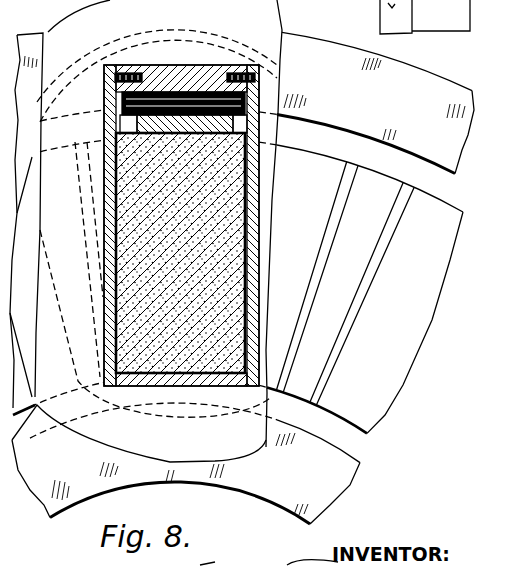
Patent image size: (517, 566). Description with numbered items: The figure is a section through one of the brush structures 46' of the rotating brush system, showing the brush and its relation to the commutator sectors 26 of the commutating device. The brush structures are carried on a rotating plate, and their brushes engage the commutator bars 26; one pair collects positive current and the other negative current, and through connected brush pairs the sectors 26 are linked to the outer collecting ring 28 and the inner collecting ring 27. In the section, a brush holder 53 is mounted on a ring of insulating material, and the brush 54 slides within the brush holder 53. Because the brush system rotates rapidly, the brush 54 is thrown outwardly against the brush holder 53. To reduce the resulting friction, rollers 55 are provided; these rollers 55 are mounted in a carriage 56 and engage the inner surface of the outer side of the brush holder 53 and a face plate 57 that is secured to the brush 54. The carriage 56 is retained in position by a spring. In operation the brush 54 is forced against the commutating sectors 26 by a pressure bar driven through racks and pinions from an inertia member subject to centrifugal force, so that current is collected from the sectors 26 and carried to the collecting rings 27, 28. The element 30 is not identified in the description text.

The commutator sectors 26 is at (30, 152).
The inner collecting ring 27 is at (186, 463).
The outer collecting ring 28 is at (257, 102).
The housing member 30 is at (444, 26).
The brush structure 46' is at (16, 11).
The brush holder 53 is at (156, 65).
The brush 54 is at (180, 253).
The rollers 55 is at (193, 92).
The carriage 56 is at (118, 110).
The face plate 57 is at (259, 131).